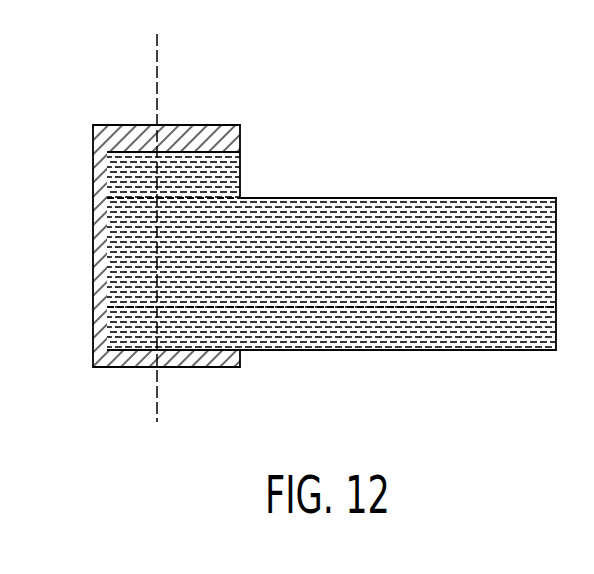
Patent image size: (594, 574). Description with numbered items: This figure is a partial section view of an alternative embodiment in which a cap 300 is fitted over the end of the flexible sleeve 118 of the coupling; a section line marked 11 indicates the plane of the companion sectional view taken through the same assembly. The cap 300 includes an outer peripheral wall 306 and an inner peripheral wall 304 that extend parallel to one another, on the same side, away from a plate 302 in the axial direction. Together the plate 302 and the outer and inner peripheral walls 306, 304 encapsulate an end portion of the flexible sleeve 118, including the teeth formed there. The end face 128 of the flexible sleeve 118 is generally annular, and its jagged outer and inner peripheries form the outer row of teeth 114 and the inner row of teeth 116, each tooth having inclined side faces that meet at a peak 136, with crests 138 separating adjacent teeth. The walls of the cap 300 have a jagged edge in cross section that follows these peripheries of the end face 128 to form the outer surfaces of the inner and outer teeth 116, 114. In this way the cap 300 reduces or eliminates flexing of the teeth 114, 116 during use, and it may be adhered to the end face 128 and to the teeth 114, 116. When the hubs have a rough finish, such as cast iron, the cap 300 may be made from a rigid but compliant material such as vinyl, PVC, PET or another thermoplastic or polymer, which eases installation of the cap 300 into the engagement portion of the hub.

The section line 11- 11 is at (157, 34).
The outer row of teeth 114 is at (227, 187).
The inner row of teeth 116 is at (371, 340).
The flexible sleeve 118 is at (411, 225).
The end face 128 is at (108, 220).
The peak 136 is at (224, 137).
The crest 138 is at (177, 192).
The cap 300 is at (74, 359).
The plate 302 is at (102, 255).
The inner peripheral wall 304 is at (128, 357).
The outer peripheral wall 306 is at (123, 133).